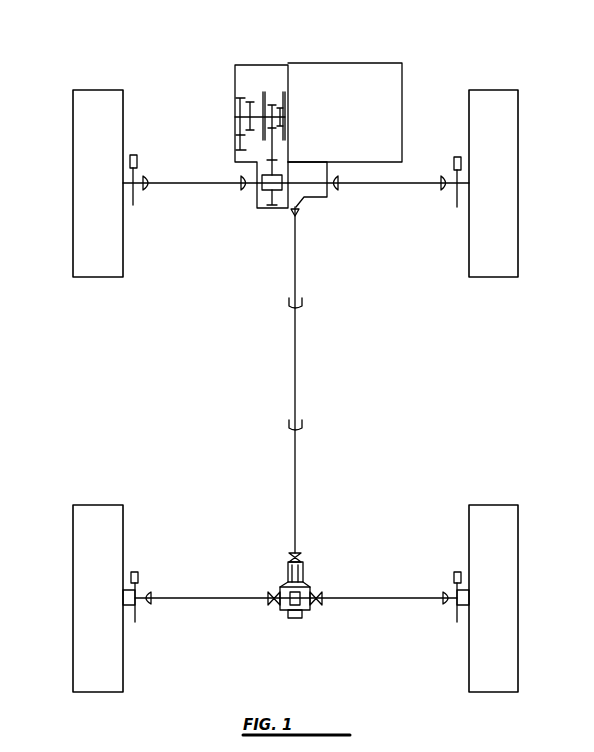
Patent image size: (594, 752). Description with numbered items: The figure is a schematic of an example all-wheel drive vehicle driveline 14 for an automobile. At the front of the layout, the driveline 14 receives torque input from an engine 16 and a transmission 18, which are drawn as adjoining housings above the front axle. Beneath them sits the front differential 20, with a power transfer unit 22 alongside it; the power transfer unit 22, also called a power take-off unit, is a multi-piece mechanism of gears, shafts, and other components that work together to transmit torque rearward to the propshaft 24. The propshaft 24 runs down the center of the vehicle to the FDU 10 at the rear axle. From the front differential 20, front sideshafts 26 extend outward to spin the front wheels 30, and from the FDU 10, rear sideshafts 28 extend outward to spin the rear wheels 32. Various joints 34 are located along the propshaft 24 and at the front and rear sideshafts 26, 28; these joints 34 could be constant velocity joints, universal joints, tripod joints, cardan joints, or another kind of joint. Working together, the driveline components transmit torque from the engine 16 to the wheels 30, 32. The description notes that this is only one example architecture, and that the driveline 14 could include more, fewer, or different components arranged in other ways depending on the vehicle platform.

The FDU 10 is at (306, 579).
The vehicle driveline 14 is at (433, 378).
The engine 16 is at (383, 78).
The transmission 18 is at (252, 73).
The front differential 20 is at (262, 187).
The power transfer unit 22 is at (313, 198).
The propshaft 24 is at (296, 367).
The front sideshafts 26 is at (187, 182).
The rear sideshafts 28 is at (213, 597).
The front wheels 30 is at (97, 250).
The rear wheels 32 is at (98, 652).
The joints 34 is at (147, 190).